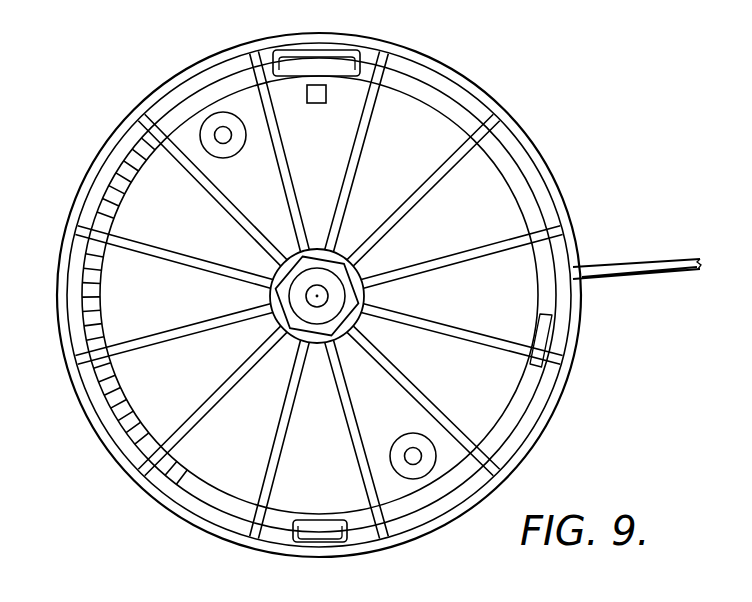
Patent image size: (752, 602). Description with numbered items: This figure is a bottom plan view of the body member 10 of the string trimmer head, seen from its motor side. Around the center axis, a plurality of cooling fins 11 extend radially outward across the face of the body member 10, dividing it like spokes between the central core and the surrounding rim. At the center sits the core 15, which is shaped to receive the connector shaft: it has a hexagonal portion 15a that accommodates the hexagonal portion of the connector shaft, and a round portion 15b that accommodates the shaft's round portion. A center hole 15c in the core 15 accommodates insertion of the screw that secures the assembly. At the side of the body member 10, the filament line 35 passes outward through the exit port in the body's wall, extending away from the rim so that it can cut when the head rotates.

The body member 10 is at (88, 430).
The cooling fins 11 is at (203, 180).
The core 15 is at (338, 291).
The hexagonal portion 15a is at (334, 252).
The round portion 15b is at (313, 314).
The center hole 15c is at (315, 283).
The filament line 35 is at (644, 266).